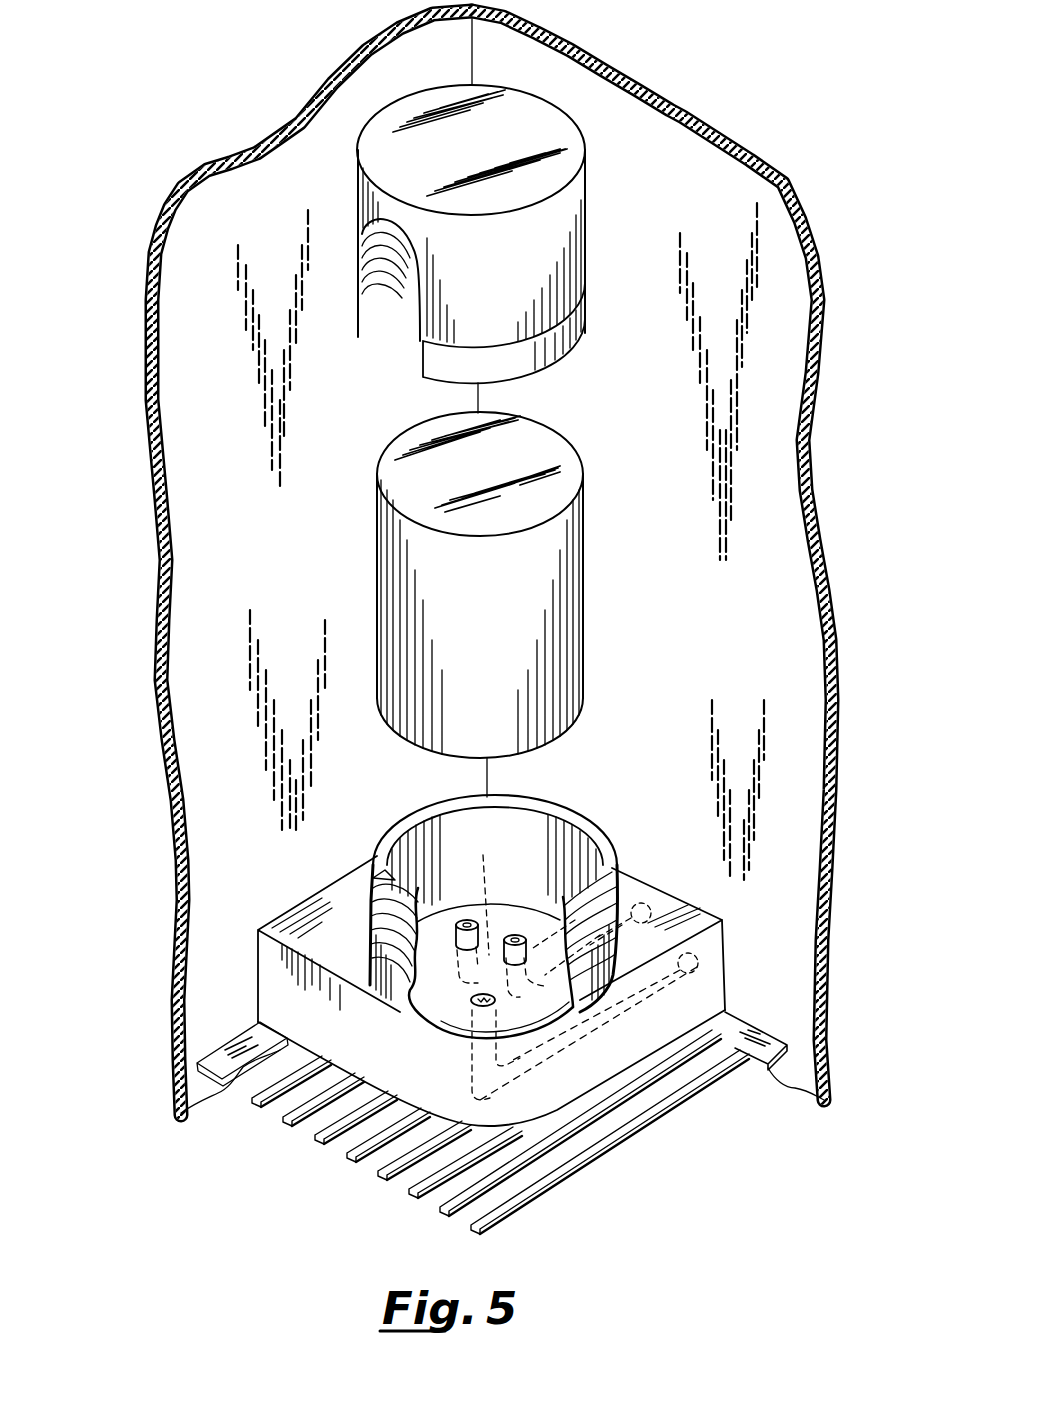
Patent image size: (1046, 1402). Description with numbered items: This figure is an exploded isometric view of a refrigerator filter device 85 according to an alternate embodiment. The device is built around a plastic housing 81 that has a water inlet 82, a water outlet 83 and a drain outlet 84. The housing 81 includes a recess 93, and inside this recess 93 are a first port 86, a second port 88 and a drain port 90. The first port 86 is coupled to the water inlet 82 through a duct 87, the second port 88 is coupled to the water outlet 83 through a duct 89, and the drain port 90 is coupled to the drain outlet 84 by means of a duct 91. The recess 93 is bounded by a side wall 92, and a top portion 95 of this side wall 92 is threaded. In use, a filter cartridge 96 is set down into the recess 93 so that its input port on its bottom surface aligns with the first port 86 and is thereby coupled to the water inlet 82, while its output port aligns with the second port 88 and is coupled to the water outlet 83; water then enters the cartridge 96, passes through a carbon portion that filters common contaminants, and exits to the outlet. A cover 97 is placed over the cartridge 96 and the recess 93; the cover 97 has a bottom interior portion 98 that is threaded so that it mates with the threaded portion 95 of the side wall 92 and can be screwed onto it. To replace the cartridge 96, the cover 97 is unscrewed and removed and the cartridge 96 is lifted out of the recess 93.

The housing 81 is at (330, 903).
The water inlet 82 is at (625, 890).
The water outlet 83 is at (699, 961).
The drain outlet 84 is at (622, 925).
The refrigerator filter device 85 is at (225, 112).
The first port 86 is at (466, 921).
The duct 87 is at (476, 902).
The second port 88 is at (515, 936).
The duct 89 is at (553, 970).
The drain port 90 is at (472, 1001).
The duct 91 is at (472, 1068).
The side wall 92 is at (500, 825).
The recess 93 is at (444, 968).
The threaded top portion 95 is at (375, 877).
The filter cartridge 96 is at (583, 565).
The cover 97 is at (586, 228).
The threaded bottom interior portion 98 is at (377, 258).